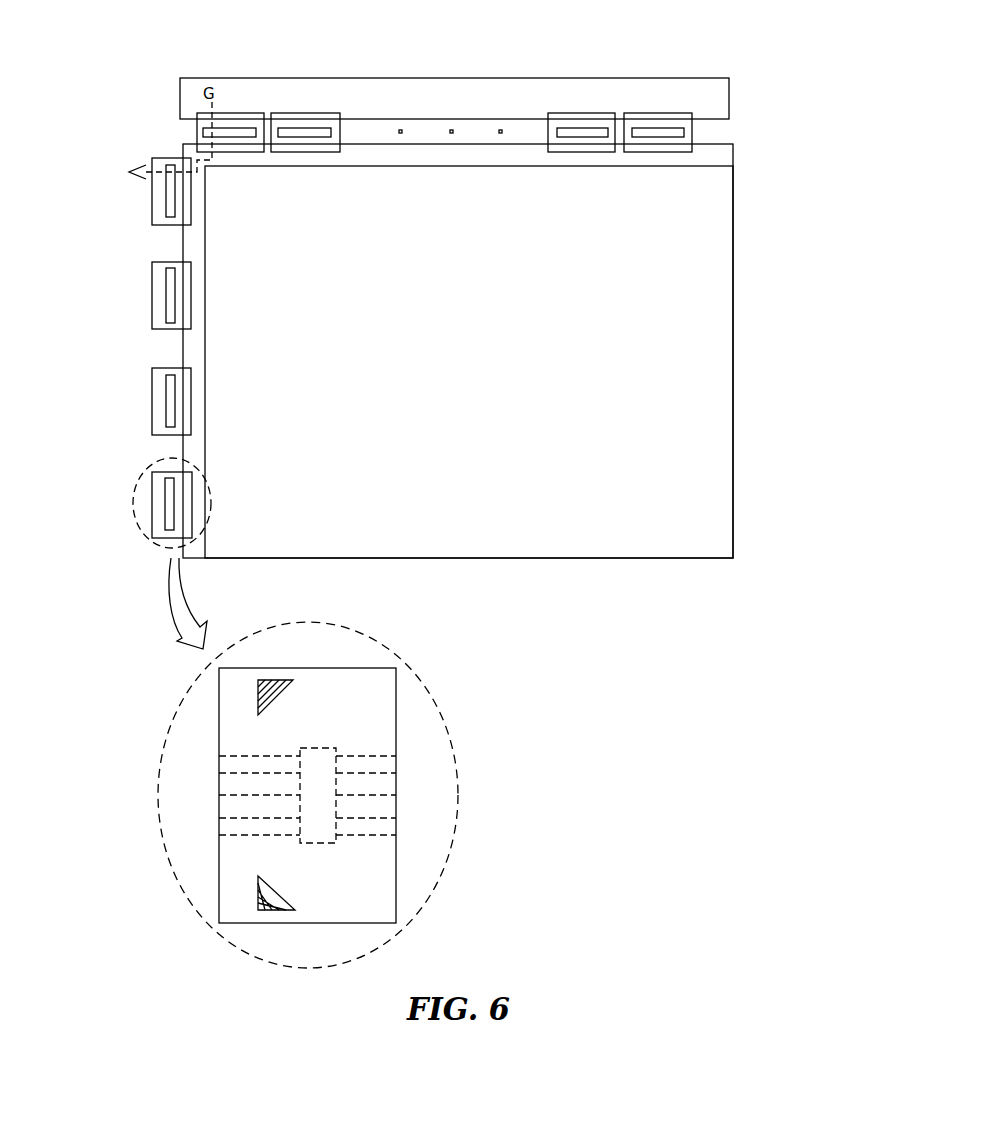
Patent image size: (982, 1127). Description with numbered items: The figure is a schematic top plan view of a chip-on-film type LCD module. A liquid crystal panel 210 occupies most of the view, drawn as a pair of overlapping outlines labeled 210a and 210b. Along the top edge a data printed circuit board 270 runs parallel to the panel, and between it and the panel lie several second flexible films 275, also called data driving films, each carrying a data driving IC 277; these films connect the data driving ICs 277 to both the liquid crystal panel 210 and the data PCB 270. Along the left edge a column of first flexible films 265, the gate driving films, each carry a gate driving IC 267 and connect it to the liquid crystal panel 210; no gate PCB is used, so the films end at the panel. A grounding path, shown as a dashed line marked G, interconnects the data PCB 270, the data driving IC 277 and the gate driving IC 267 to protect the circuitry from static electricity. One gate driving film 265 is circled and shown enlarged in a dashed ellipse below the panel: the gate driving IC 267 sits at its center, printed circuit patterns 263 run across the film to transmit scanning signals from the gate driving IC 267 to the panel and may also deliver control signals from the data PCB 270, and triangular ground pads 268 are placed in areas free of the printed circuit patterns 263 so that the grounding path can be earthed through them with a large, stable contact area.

The liquid crystal panel 210 is at (539, 350).
The first substrate 210a is at (720, 157).
The second substrate 210b is at (720, 242).
The printed circuit patterns 263 is at (240, 755).
The first flexible film 265 is at (153, 305).
The gate driving IC 267 is at (167, 395).
The ground pad 268 is at (273, 680).
The data printed circuit board 270 is at (450, 87).
The second flexible film 275 is at (292, 112).
The data driving IC 277 is at (250, 132).